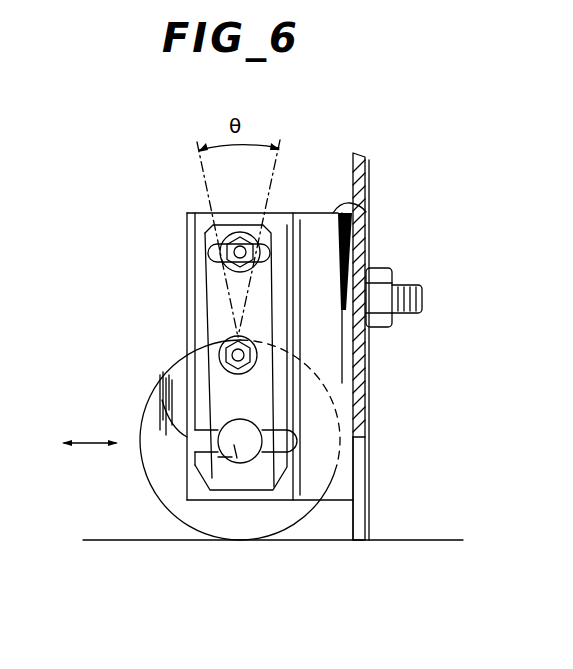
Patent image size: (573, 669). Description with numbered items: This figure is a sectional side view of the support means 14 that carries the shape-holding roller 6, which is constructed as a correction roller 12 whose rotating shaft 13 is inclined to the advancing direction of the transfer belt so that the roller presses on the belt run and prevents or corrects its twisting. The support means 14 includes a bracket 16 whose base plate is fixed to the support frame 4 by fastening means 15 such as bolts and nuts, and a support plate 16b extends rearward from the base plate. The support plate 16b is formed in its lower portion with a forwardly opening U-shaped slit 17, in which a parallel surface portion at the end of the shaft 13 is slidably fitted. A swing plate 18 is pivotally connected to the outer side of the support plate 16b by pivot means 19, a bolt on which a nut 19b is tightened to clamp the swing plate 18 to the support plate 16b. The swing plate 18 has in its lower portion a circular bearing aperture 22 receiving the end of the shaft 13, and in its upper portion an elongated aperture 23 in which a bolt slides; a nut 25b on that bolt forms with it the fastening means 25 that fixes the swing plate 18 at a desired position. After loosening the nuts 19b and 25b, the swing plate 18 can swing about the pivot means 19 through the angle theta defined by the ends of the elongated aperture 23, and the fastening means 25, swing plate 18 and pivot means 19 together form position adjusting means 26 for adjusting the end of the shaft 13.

The support frame 4 is at (364, 186).
The shape-holding roller 6 is at (189, 440).
The correction roller 12 is at (151, 489).
The rotating shaft 13 is at (164, 524).
The support means 14 is at (325, 158).
The fastening means 15 is at (427, 282).
The bracket 16 is at (357, 363).
The support plate 16b is at (362, 208).
The U-shaped slit 17 is at (158, 395).
The swing plate 18 is at (190, 289).
The pivot means 19 is at (225, 342).
The nut 19b is at (250, 352).
The circular bearing aperture 22 is at (241, 449).
The elongated aperture 23 is at (214, 254).
The fastening means 25 is at (176, 209).
The nut 25b is at (213, 244).
The position adjusting means 26 is at (338, 461).